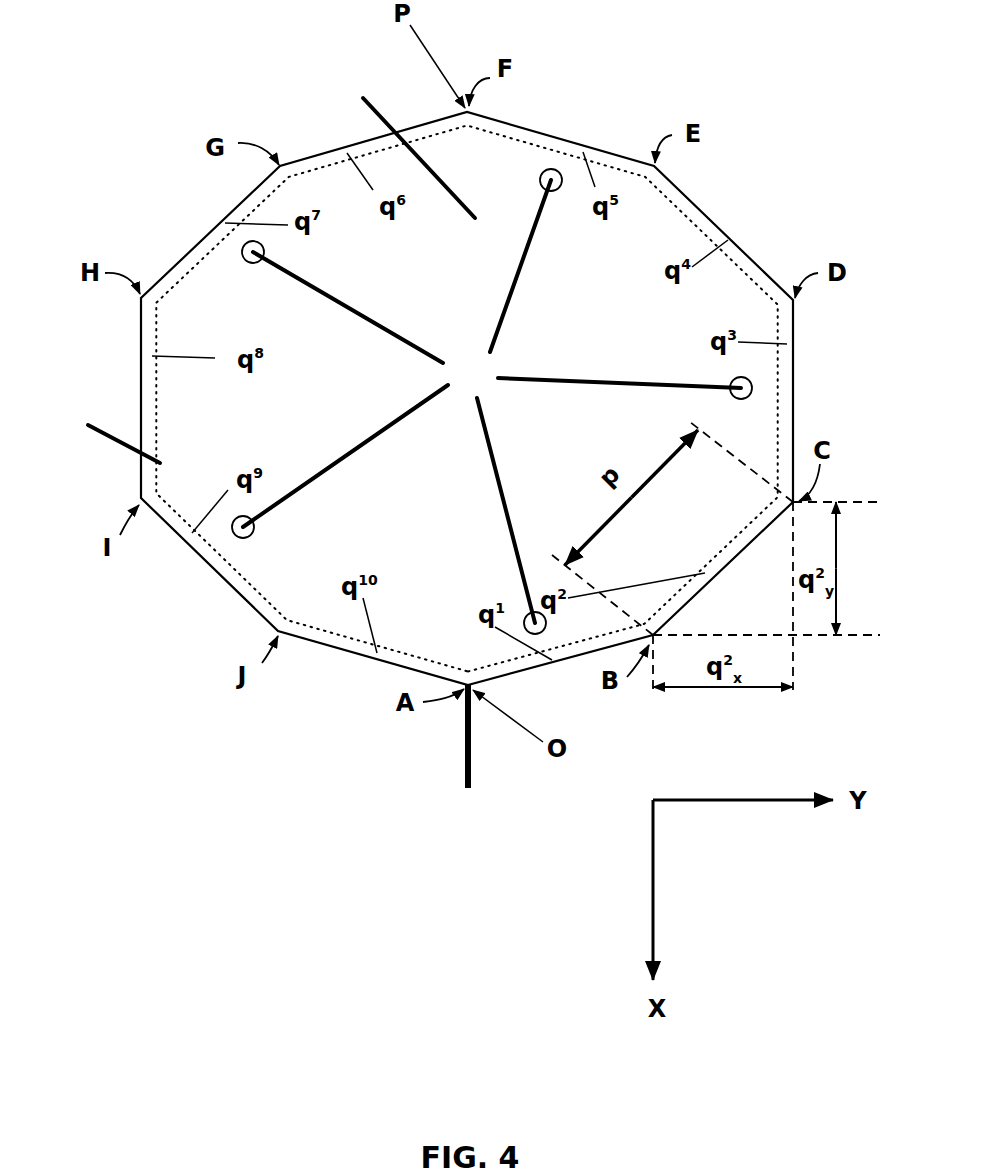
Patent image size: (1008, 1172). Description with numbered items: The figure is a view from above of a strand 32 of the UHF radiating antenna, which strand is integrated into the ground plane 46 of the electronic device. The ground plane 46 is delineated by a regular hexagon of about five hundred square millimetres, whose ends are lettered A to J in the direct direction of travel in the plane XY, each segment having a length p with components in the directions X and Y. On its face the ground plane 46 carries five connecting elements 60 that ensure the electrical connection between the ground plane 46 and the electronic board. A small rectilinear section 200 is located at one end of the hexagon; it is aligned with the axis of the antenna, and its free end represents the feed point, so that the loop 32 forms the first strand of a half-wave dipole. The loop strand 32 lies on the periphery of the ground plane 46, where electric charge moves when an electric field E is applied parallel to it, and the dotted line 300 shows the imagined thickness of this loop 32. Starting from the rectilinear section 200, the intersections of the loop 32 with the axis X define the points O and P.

The strand 32 is at (742, 230).
The ground plane 46 is at (403, 142).
The connecting elements 60 is at (492, 401).
The rectilinear section 200 is at (465, 728).
The dotted line 300 is at (100, 434).